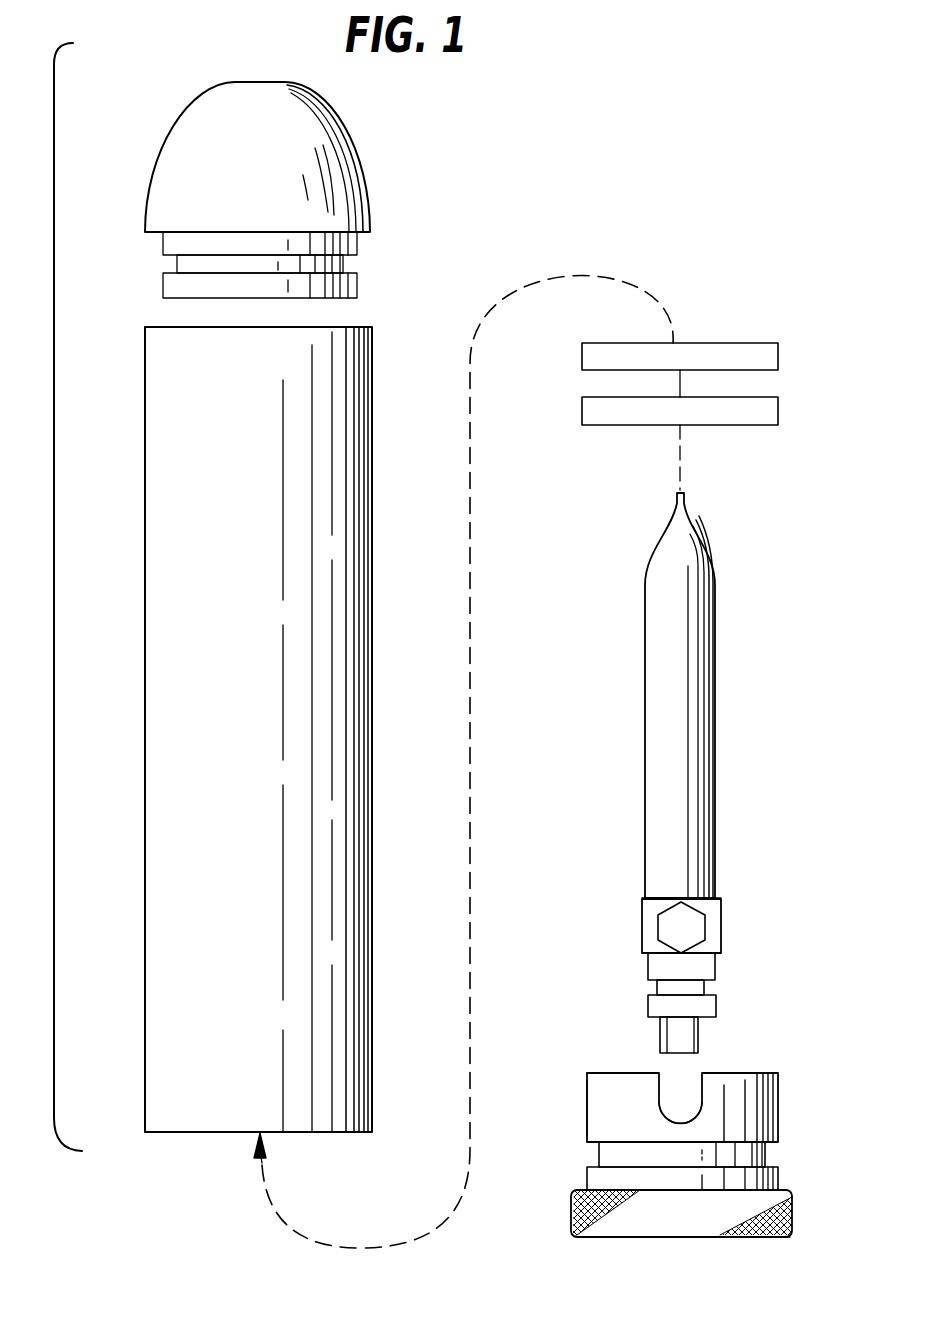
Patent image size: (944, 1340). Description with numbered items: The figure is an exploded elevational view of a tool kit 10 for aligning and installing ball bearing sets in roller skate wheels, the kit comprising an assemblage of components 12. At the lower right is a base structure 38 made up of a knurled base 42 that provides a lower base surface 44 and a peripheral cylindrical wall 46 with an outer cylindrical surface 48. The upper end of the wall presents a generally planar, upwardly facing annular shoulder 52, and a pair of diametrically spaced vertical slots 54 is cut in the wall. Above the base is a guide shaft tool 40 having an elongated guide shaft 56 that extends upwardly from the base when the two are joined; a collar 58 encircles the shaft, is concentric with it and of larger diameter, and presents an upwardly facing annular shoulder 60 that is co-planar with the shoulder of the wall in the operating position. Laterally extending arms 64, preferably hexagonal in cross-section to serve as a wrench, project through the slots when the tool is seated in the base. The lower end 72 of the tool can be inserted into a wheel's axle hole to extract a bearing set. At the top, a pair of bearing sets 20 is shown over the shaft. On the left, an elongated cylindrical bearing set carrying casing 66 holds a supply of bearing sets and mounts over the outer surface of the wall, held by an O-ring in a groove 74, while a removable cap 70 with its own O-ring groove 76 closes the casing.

The tool kit 10 is at (420, 300).
The assemblage of components 12 is at (780, 961).
The bearing sets 20 is at (770, 351).
The base structure 38 is at (666, 1097).
The guide shaft tool 40 is at (712, 695).
The knurled base 42 is at (792, 1213).
The lower base surface 44 is at (743, 1238).
The peripheral cylindrical wall 46 is at (748, 1092).
The outer cylindrical surface 48 is at (587, 1087).
The annular shoulder 52 is at (592, 1073).
The vertical slots 54 is at (688, 1080).
The guide shaft 56 is at (699, 818).
The collar 58 is at (677, 924).
The annular shoulder 60 is at (645, 897).
The laterally extending arms 64 is at (667, 930).
The bearing set carrying casing 66 is at (326, 688).
The removable cap 70 is at (360, 166).
The end 72 is at (712, 968).
The groove 74 is at (767, 1155).
The groove 76 is at (352, 258).